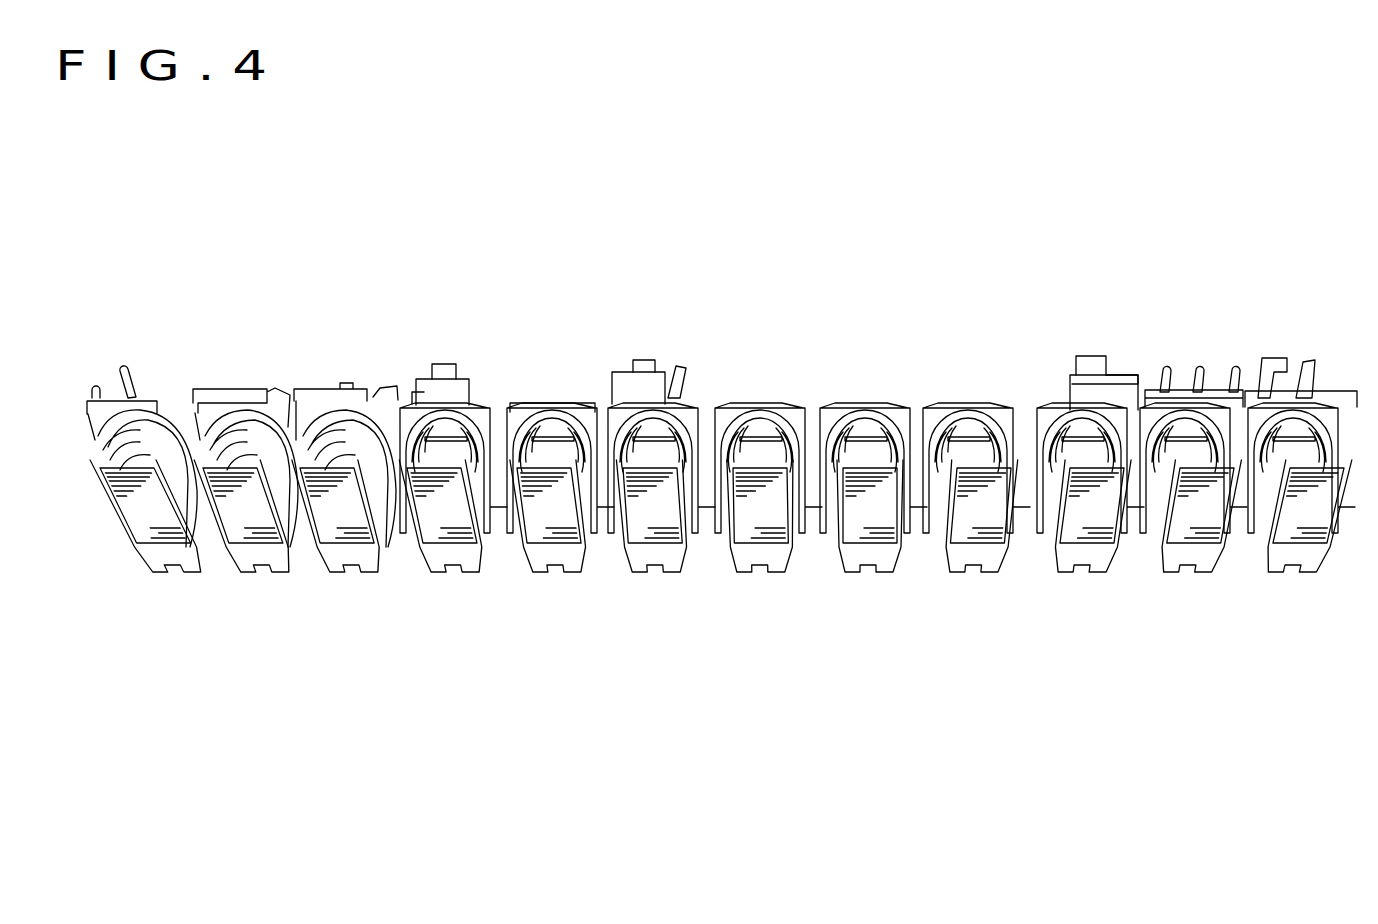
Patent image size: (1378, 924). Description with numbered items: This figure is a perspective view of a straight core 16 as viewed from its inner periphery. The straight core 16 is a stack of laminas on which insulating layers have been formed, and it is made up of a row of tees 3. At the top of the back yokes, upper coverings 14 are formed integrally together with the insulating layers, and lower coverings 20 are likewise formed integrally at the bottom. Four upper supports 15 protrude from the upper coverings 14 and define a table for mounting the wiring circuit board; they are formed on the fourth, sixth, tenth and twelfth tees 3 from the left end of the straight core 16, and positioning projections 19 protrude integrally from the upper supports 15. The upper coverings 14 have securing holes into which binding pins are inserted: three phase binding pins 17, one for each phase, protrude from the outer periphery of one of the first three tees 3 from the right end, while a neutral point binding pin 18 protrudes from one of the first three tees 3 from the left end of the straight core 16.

The tee 3 is at (446, 553).
The upper covering 14 is at (307, 388).
The upper support 15 is at (417, 393).
The straight core 16 is at (788, 253).
The phase binding pin 17 is at (1200, 368).
The neutral point binding pin 18 is at (133, 368).
The positioning projection 19 is at (445, 363).
The lower covering 20 is at (356, 553).